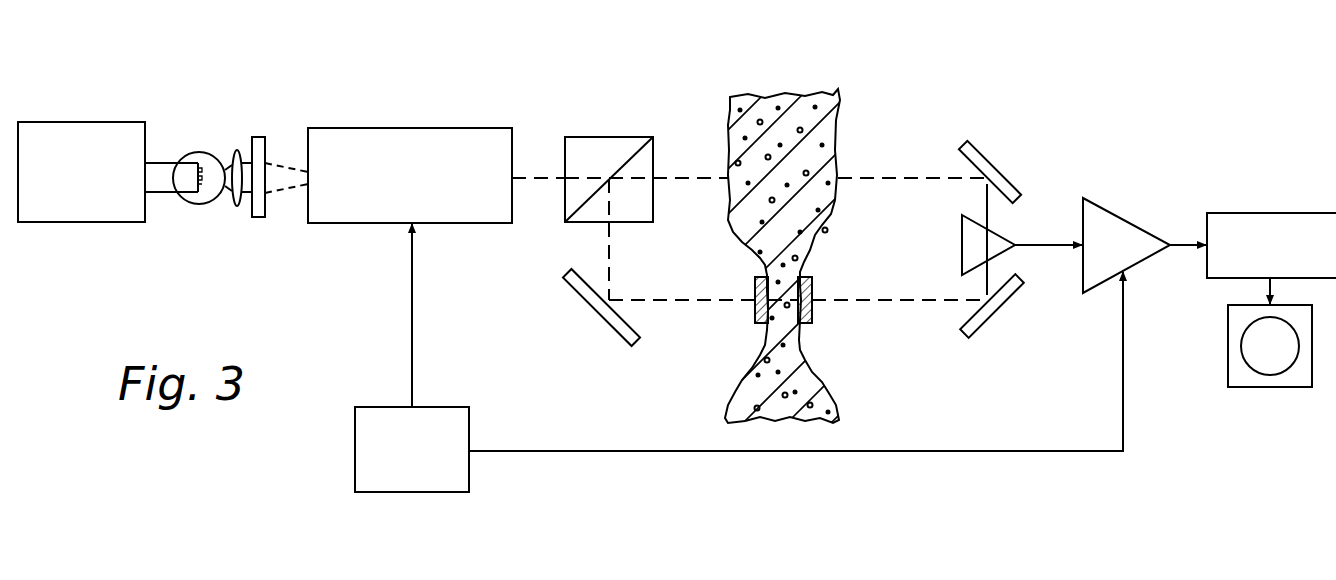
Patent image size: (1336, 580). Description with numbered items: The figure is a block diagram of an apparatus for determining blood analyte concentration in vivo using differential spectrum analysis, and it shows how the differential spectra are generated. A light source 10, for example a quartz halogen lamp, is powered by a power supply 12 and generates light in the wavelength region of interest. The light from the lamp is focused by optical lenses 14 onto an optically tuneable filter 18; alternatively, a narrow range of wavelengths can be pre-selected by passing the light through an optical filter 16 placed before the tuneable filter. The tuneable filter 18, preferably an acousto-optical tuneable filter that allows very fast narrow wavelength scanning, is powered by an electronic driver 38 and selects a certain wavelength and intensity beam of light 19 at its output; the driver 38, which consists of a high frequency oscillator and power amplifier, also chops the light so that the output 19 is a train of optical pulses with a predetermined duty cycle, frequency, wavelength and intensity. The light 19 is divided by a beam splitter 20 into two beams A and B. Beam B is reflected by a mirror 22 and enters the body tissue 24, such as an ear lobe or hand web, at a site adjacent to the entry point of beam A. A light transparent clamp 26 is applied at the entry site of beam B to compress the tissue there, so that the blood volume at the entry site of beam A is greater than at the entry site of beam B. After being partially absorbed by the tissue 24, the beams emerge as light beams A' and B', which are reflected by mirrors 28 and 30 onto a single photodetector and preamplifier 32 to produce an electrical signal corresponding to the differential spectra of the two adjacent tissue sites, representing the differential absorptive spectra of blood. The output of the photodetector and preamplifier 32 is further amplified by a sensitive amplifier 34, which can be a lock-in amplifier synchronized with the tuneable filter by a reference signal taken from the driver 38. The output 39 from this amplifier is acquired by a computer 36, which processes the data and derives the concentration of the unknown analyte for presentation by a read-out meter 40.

The light source 10 is at (196, 153).
The power supply 12 is at (100, 122).
The optical lenses 14 is at (237, 206).
The optical filter 16 is at (264, 137).
The optically tuneable filter 18 is at (420, 128).
The beam of light 19 is at (541, 178).
The beam splitter 20 is at (608, 137).
The mirror 22 is at (591, 305).
The body tissue 24 is at (838, 136).
The light transparent clamp 26 is at (812, 284).
The mirror 28 is at (992, 162).
The mirror 30 is at (1002, 302).
The photodetector and preamplifier 32 is at (962, 238).
The amplifier 34 is at (1108, 212).
The computer 36 is at (1251, 213).
The electronic driver 38 is at (469, 420).
The amplifier output 39 is at (1185, 257).
The read-out meter 40 is at (1240, 388).
The beam A is at (629, 138).
The light beam A' is at (912, 154).
The beam B is at (703, 239).
The light beam B' is at (899, 325).